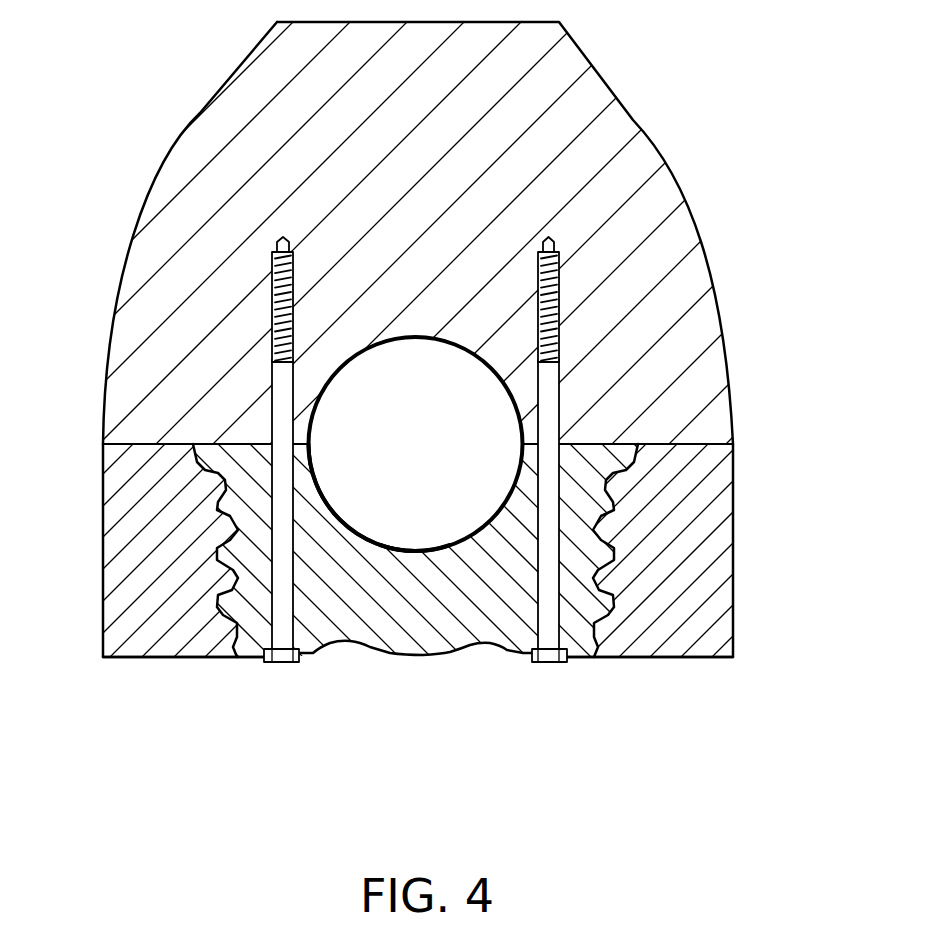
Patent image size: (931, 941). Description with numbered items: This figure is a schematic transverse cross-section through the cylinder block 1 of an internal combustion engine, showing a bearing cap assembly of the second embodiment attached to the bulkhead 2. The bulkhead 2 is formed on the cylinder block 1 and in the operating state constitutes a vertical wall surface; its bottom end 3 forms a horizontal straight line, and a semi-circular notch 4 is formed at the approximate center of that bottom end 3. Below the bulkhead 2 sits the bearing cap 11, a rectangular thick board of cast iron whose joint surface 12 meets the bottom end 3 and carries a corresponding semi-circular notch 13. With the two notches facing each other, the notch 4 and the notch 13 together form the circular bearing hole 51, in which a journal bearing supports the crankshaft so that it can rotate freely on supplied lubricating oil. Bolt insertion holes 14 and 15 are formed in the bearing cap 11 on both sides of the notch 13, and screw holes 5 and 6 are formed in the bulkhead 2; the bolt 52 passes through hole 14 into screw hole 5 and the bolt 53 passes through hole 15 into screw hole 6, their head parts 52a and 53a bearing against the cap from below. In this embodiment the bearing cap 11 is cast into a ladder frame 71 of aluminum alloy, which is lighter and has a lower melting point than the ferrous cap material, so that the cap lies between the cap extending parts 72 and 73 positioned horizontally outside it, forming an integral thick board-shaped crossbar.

The cylinder block 1 is at (678, 88).
The bulkhead 2 is at (617, 227).
The bottom end 3 is at (663, 450).
The semi-circular notch 4 is at (343, 368).
The screw hole 5 is at (273, 355).
The screw hole 6 is at (559, 345).
The bearing cap 11 is at (350, 652).
The joint surface 12 is at (577, 444).
The semi-circular notch 13 is at (445, 545).
The bolt insertion hole 14 is at (272, 498).
The bolt insertion hole 15 is at (559, 506).
The bearing hole 51 is at (395, 475).
The bolt 52 is at (283, 386).
The head part 52a is at (267, 665).
The bolt 53 is at (560, 369).
The head part 53a is at (557, 663).
The ladder frame 71 is at (214, 690).
The cap extending part 72 is at (170, 620).
The cap extending part 73 is at (643, 615).